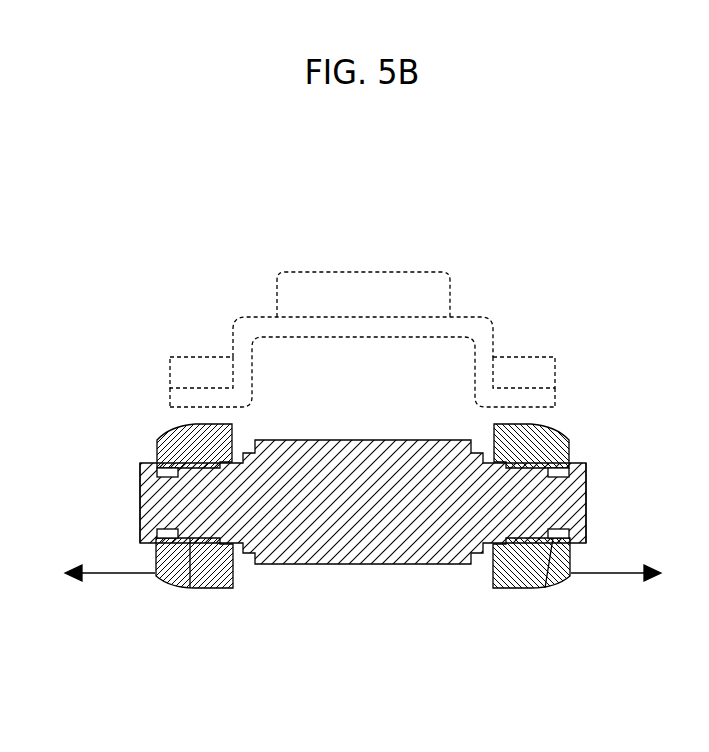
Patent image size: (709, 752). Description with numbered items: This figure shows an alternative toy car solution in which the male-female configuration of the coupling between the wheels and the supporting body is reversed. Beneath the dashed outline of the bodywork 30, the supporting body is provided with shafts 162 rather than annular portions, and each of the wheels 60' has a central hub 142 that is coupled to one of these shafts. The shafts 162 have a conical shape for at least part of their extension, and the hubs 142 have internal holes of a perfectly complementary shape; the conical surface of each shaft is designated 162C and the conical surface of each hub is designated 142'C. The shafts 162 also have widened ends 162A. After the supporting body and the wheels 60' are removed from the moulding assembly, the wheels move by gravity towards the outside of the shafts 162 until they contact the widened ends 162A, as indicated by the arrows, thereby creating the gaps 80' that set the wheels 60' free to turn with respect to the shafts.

The bodywork 30 is at (357, 288).
The wheels 60' is at (357, 345).
The gaps 80' is at (375, 502).
The central hub 142 is at (358, 418).
The conical surface of the hub 142'C is at (371, 614).
The shafts 162 is at (156, 522).
The widened ends 162A is at (140, 493).
The conical surface of the shaft 162C is at (190, 538).